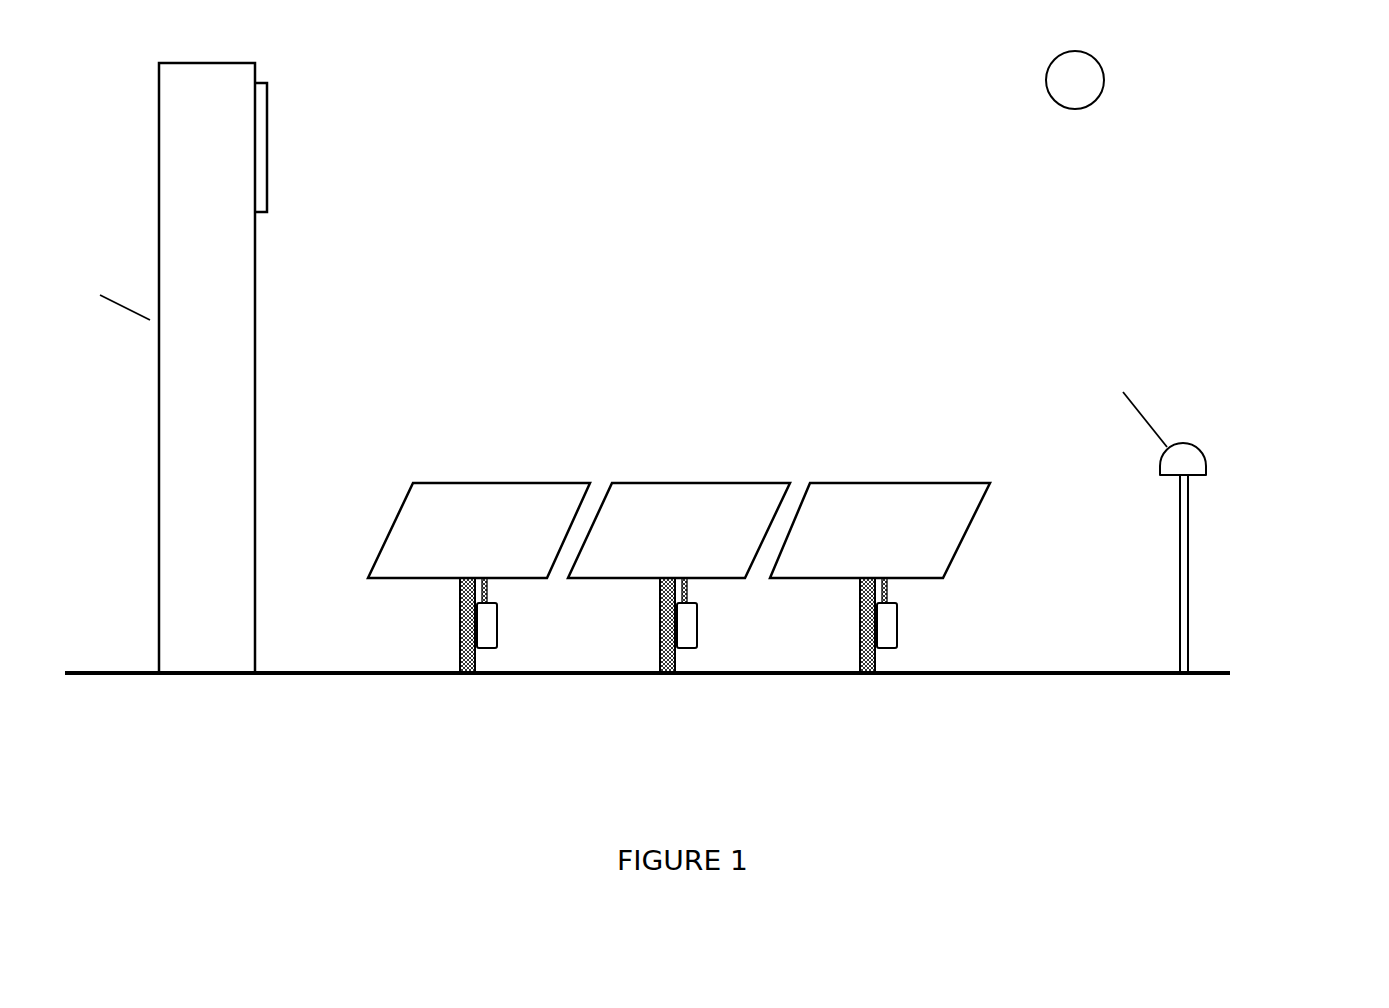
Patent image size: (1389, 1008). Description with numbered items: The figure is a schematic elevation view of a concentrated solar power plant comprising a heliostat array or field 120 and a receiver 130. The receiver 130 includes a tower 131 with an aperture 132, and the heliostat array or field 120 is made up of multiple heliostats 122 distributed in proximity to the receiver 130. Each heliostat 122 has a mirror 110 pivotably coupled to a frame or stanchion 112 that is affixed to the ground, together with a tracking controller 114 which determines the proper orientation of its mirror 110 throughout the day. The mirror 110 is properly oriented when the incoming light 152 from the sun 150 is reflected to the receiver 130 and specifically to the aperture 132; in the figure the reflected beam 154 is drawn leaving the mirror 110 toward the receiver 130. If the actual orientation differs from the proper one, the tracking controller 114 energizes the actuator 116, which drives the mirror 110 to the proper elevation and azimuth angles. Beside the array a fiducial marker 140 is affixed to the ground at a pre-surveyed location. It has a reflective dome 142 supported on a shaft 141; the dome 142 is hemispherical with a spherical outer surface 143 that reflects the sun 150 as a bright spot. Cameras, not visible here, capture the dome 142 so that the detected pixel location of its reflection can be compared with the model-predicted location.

The mirror 110 is at (679, 530).
The frame or stanchion 112 is at (467, 673).
The tracking controller 114 is at (497, 622).
The actuator 116 is at (488, 588).
The heliostat array or field 120 is at (683, 375).
The heliostat 122 is at (990, 478).
The receiver 130 is at (255, 328).
The tower 131 is at (88, 292).
The aperture 132 is at (267, 115).
The fiducial marker 140 is at (1237, 503).
The shaft 141 is at (1192, 610).
The reflective dome 142 is at (1215, 443).
The spherical outer surface 143 is at (1132, 401).
The sun 150 is at (1075, 115).
The incoming light 152 is at (685, 522).
The reflected light ray 154 is at (685, 522).